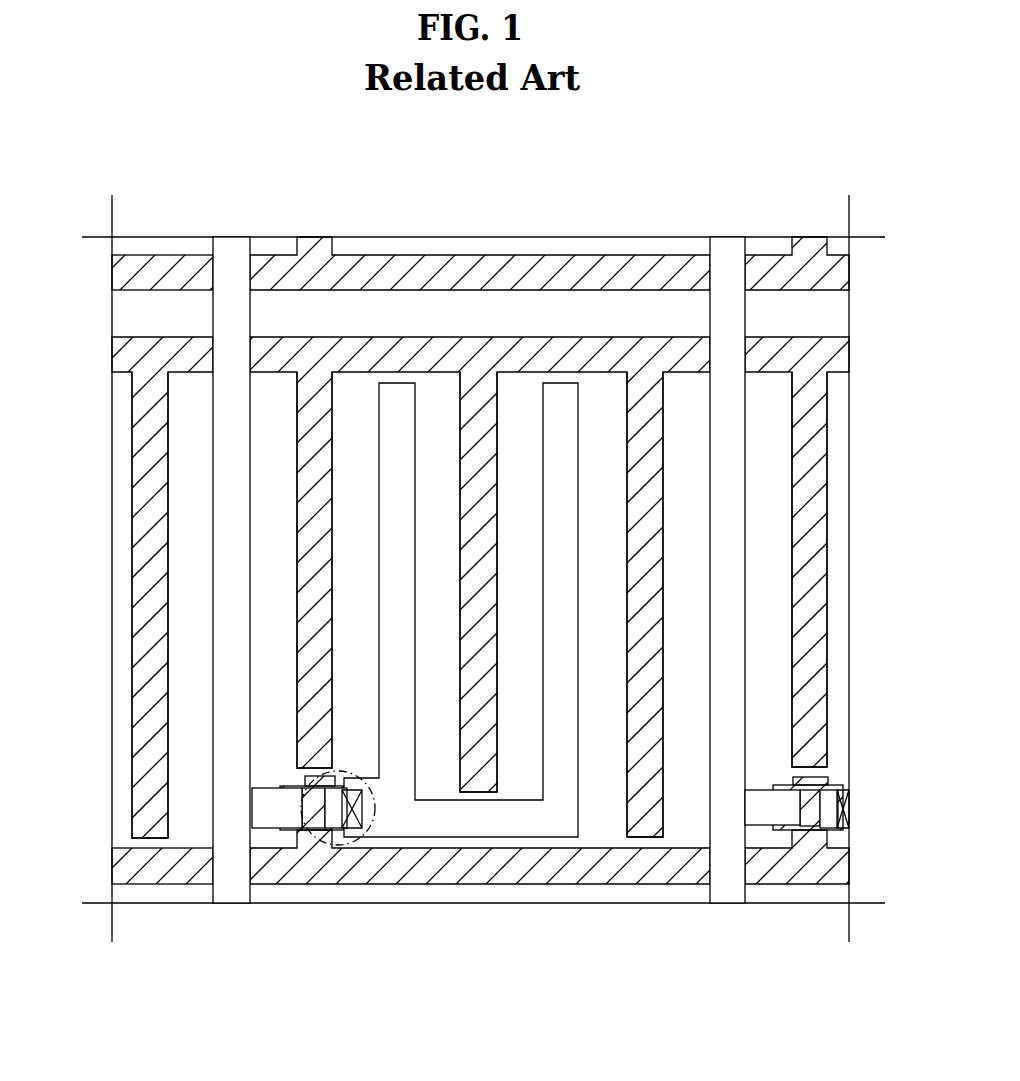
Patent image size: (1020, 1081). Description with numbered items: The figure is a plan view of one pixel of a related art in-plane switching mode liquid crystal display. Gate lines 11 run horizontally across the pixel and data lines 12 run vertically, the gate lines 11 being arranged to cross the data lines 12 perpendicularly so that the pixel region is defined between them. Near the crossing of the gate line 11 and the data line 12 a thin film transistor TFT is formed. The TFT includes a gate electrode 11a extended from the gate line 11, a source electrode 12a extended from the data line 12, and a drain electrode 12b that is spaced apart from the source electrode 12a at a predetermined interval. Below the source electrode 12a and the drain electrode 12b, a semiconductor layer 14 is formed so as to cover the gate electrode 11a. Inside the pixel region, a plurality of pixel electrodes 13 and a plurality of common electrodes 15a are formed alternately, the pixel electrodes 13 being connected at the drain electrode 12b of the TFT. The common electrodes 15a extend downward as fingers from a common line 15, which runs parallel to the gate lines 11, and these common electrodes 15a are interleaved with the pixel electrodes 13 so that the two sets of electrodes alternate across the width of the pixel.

The gate line 11 is at (128, 268).
The gate electrode 11a is at (300, 785).
The data line 12 is at (233, 362).
The source electrode 12a is at (296, 808).
The drain electrode 12b is at (328, 810).
The pixel electrode 13 is at (390, 632).
The semiconductor layer 14 is at (317, 807).
The common line 15 is at (800, 348).
The common electrode 15a is at (330, 712).
The thin film transistor TFT is at (345, 838).